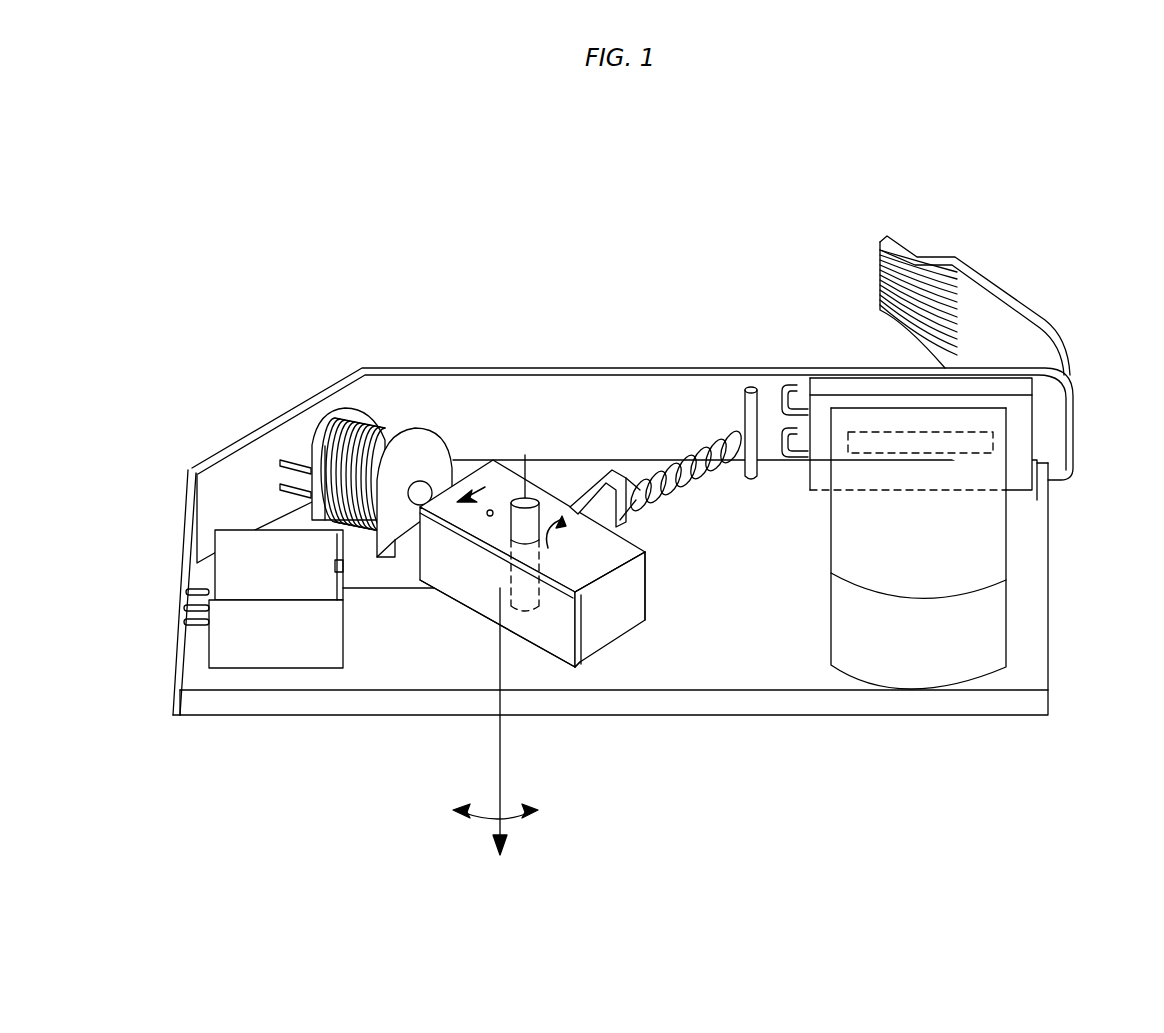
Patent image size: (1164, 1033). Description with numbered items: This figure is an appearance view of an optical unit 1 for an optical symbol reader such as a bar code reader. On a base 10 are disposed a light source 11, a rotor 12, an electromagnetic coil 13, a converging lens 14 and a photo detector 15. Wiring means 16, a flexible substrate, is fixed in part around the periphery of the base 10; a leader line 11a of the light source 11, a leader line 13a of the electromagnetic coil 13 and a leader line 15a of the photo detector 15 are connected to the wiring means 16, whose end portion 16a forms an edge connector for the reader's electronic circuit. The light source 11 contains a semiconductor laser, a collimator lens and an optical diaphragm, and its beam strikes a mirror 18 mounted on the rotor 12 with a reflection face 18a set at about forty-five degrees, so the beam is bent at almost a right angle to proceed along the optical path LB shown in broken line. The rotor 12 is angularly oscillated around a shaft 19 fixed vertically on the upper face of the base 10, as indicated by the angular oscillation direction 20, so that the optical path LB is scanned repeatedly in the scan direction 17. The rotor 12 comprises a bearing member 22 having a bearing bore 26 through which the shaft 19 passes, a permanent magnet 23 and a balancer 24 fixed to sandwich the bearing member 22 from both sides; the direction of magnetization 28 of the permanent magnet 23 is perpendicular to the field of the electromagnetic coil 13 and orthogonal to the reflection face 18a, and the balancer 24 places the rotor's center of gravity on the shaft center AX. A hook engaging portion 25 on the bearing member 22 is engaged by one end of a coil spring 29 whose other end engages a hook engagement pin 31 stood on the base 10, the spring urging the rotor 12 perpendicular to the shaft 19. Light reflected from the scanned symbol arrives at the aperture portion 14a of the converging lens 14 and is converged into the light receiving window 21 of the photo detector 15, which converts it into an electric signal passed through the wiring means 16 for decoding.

The optical unit 1 is at (803, 167).
The base 10 is at (757, 700).
The light source 11 is at (272, 648).
The leader line 11a is at (192, 590).
The rotor 12 is at (565, 597).
The electromagnetic coil 13 is at (380, 427).
The leader line 13a is at (288, 462).
The converging lens 14 is at (991, 548).
The aperture portion 14a is at (975, 638).
The photo detector 15 is at (1017, 450).
The leader line 15a is at (790, 385).
The wiring means 16 is at (605, 368).
The end portion 16a is at (900, 242).
The scan direction 17 is at (487, 812).
The mirror 18 is at (577, 629).
The reflection face 18a is at (552, 635).
The shaft 19 is at (535, 500).
The angular oscillation direction 20 is at (645, 557).
The light receiving window 21 is at (993, 432).
The bearing member 22 is at (495, 515).
The permanent magnet 23 is at (480, 485).
The balancer 24 is at (607, 565).
The hook engaging portion 25 is at (635, 528).
The bearing bore 26 is at (553, 527).
The direction of magnetization 28 is at (488, 513).
The coil spring 29 is at (688, 448).
The hook engagement pin 31 is at (746, 388).
The shaft center AX is at (527, 453).
The optical path LB is at (493, 737).